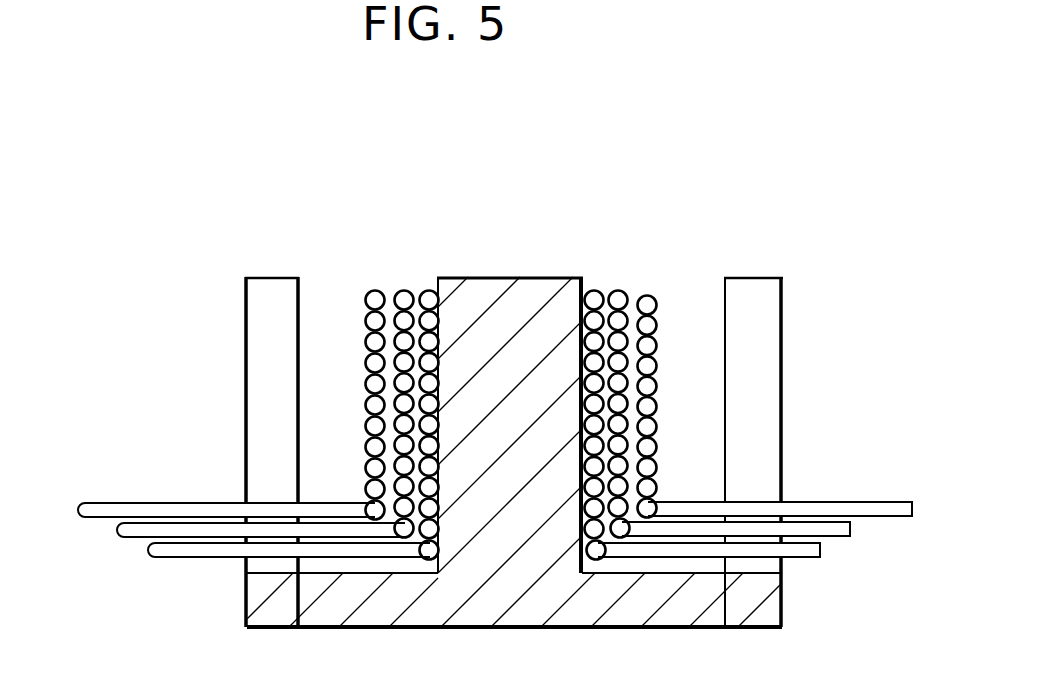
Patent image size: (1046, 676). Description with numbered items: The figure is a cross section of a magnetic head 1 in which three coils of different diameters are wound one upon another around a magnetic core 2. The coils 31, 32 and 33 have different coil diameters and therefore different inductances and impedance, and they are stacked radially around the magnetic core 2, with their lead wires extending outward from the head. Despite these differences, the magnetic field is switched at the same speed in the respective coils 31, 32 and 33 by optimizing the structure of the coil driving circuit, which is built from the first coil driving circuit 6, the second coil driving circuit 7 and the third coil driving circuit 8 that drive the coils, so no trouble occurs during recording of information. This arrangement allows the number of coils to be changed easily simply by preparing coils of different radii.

The magnetic head 1 is at (789, 266).
The magnetic core 2 is at (533, 290).
The first coil driving circuit 6 is at (429, 286).
The second coil driving circuit 7 is at (403, 287).
The third coil driving circuit 8 is at (376, 287).
The coil 31 is at (594, 290).
The coil 32 is at (619, 290).
The coil 33 is at (649, 297).